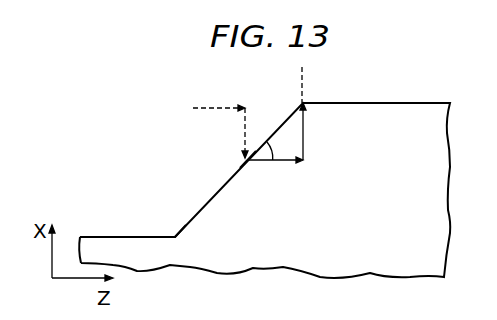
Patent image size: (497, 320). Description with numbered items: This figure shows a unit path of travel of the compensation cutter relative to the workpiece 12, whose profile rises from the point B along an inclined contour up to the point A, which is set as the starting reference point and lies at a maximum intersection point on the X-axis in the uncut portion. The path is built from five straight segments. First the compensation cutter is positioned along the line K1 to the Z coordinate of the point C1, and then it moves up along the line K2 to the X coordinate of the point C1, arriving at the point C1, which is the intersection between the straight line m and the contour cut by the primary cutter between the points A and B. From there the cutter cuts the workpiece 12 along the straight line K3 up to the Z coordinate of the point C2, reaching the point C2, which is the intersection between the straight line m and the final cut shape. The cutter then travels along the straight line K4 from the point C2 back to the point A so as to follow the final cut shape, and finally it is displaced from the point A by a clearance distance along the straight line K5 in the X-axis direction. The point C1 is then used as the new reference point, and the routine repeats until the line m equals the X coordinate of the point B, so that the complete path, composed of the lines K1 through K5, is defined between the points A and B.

The workpiece 12 is at (212, 212).
The line K1 is at (222, 104).
The line K2 is at (245, 135).
The straight line K3 is at (267, 142).
The straight line K4 is at (305, 130).
The straight line K5 is at (301, 80).
The intersection point A is at (334, 92).
The intersection point B is at (172, 228).
The point of intersection C1 is at (249, 163).
The point of intersection C2 is at (336, 166).